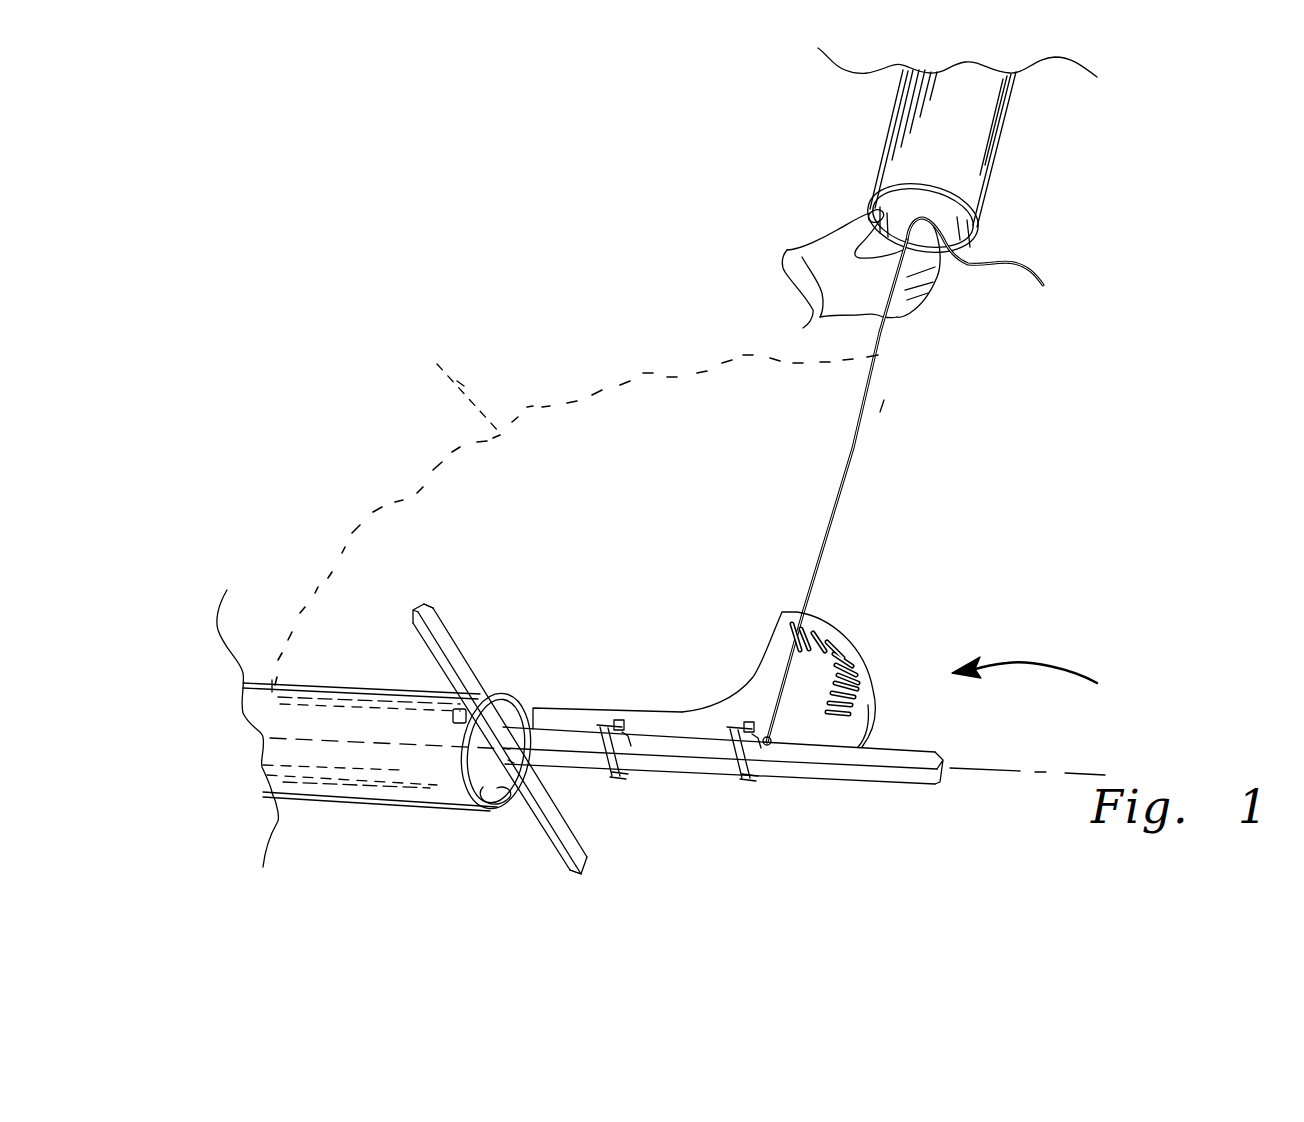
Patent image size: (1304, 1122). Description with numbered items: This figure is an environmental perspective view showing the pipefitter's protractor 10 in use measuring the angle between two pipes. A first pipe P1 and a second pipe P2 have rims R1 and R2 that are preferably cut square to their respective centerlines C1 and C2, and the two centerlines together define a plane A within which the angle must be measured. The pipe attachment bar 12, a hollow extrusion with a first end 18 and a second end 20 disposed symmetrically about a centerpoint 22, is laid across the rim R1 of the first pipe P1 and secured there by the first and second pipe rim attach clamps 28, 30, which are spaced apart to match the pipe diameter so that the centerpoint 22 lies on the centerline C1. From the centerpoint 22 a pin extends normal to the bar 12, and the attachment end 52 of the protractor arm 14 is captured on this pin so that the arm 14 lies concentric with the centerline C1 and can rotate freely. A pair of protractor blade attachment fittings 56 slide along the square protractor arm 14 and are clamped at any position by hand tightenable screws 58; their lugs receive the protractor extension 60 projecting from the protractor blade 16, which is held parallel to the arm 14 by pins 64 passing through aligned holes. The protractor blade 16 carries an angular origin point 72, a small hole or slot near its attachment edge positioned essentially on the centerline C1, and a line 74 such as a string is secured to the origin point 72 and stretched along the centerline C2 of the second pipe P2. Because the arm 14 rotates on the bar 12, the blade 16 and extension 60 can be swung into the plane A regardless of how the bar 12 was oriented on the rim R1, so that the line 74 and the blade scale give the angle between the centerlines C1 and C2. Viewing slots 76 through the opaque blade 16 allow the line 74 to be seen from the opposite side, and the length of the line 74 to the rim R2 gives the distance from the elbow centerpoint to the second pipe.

The pipefitter's protractor 10 is at (1056, 685).
The pipe attachment bar 12 is at (414, 628).
The protractor arm 14 is at (885, 787).
The protractor blade 16 is at (852, 634).
The first end 18 is at (433, 605).
The second end 20 is at (582, 874).
The centerpoint 22 is at (502, 730).
The first pipe rim attach clamp 28 is at (455, 714).
The second pipe rim attach clamp 30 is at (500, 796).
The attachment end 52 is at (512, 760).
The protractor blade attachment fitting 56 is at (737, 778).
The hand tightenable screw 58 is at (620, 727).
The protractor extension 60 is at (600, 708).
The pin 64 is at (626, 735).
The origin point 72 is at (766, 735).
The line 74 is at (850, 446).
The viewing slots 76 is at (845, 690).
The plane A is at (575, 512).
The centerline of the first pipe C1 is at (992, 770).
The centerline of the second pipe C2 is at (882, 398).
The first pipe P1 is at (330, 800).
The second pipe P2 is at (880, 138).
The rim of the first pipe R1 is at (452, 772).
The rim of the second pipe R2 is at (980, 238).